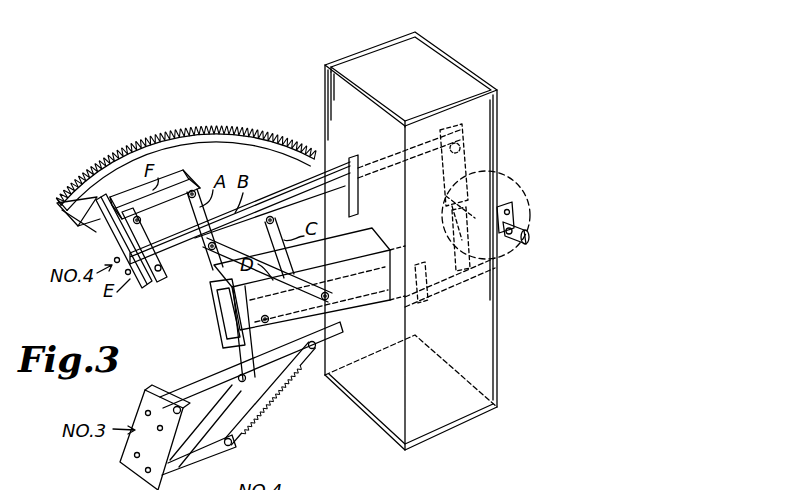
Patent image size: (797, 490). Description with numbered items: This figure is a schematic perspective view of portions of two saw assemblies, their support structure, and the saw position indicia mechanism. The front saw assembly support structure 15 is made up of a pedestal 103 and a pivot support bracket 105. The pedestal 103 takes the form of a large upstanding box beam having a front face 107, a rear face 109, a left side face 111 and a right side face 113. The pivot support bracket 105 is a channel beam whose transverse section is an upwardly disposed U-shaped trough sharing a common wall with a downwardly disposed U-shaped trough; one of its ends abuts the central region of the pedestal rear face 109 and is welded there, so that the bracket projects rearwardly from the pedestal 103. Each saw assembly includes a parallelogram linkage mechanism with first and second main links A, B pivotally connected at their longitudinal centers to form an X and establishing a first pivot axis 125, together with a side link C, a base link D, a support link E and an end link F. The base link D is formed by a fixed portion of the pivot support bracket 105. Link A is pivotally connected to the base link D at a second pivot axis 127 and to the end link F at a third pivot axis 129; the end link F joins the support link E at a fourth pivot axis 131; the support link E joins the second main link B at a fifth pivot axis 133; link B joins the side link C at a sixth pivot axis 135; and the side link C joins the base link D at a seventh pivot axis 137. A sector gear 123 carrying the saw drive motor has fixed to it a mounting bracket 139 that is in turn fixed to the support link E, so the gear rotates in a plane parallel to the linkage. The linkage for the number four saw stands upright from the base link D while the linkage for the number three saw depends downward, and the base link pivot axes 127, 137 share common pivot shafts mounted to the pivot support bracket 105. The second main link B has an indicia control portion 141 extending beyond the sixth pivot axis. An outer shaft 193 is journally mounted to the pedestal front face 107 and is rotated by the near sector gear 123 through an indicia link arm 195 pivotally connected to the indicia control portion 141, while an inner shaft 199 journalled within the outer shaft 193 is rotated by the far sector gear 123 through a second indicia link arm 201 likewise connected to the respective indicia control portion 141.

The pedestal 103 is at (455, 429).
The pivot support bracket 105 is at (342, 252).
The front face 107 is at (448, 52).
The rear face 109 is at (324, 93).
The left side face 111 is at (485, 363).
The right side face 113 is at (367, 52).
The sector gear 123 is at (167, 129).
The first pivot axis 125 is at (210, 250).
The second pivot axis 127 is at (238, 336).
The third pivot axis 129 is at (198, 190).
The fourth pivot axis 131 is at (141, 223).
The fifth pivot axis 133 is at (233, 322).
The sixth pivot axis 135 is at (285, 212).
The seventh pivot axis 137 is at (328, 298).
The mounting bracket 139 is at (95, 219).
The indicia control portion 141 is at (347, 163).
The front saw assembly support structure 15 is at (519, 286).
The outer shaft 193 is at (512, 225).
The indicia link arm 195 is at (518, 258).
The inner shaft 199 is at (528, 236).
The indicia link arm 201 is at (466, 173).